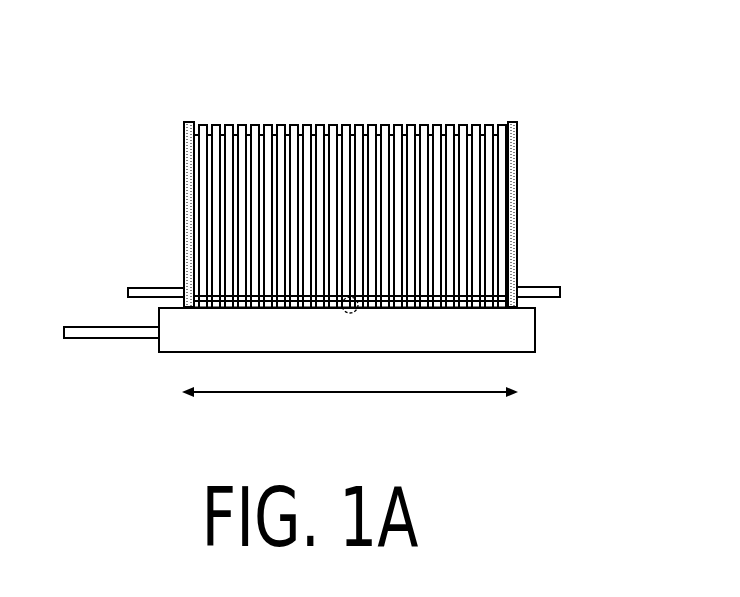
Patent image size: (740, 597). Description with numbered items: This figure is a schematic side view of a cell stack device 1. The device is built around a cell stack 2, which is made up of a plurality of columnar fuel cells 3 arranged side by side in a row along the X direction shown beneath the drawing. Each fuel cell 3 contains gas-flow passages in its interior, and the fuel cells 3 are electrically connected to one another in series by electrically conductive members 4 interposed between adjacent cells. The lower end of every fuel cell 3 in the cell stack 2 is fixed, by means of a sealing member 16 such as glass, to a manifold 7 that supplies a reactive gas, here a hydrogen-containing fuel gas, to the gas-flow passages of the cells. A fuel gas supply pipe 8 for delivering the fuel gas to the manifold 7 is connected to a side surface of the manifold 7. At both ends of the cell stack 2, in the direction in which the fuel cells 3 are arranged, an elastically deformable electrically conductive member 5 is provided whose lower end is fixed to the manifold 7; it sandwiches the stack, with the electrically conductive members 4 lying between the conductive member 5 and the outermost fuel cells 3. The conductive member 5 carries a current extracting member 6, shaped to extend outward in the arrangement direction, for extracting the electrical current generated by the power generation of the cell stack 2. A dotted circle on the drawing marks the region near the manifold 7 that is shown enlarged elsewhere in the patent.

The cell stack device 1 is at (210, 71).
The cell stack 2 is at (180, 108).
The fuel cell 3 is at (500, 163).
The electrically conductive member 4 is at (197, 196).
The elastically deformable electrically conductive member 5 is at (510, 200).
The current extracting member 6 is at (532, 292).
The manifold 7 is at (519, 338).
The fuel gas supply pipe 8 is at (93, 330).
The sealing member 16 is at (533, 305).